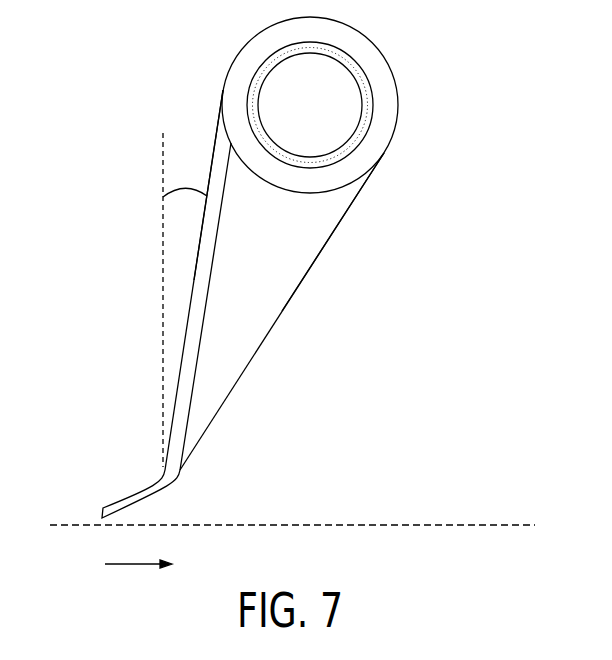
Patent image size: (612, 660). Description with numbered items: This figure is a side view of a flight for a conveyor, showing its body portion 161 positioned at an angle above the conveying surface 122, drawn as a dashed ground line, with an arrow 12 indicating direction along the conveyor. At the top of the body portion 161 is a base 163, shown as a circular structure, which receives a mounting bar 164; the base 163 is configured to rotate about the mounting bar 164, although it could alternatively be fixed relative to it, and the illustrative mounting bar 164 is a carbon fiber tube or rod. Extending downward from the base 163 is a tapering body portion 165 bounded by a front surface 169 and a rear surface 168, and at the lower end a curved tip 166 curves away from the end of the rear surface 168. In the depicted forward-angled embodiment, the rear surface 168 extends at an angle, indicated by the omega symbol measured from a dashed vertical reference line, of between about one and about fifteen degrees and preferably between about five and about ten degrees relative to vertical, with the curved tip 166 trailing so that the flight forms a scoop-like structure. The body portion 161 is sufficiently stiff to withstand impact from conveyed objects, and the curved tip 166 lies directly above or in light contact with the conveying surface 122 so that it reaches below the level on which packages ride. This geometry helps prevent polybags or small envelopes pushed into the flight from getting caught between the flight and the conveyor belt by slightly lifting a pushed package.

The direction of travel 12 is at (150, 564).
The conveying surface 122 is at (306, 511).
The body portion 161 is at (273, 262).
The base 163 is at (281, 35).
The mounting bar 164 is at (297, 116).
The tapering body portion 165 is at (267, 247).
The curved tip 166 is at (105, 486).
The rear surface 168 is at (186, 330).
The front surface 169 is at (290, 303).